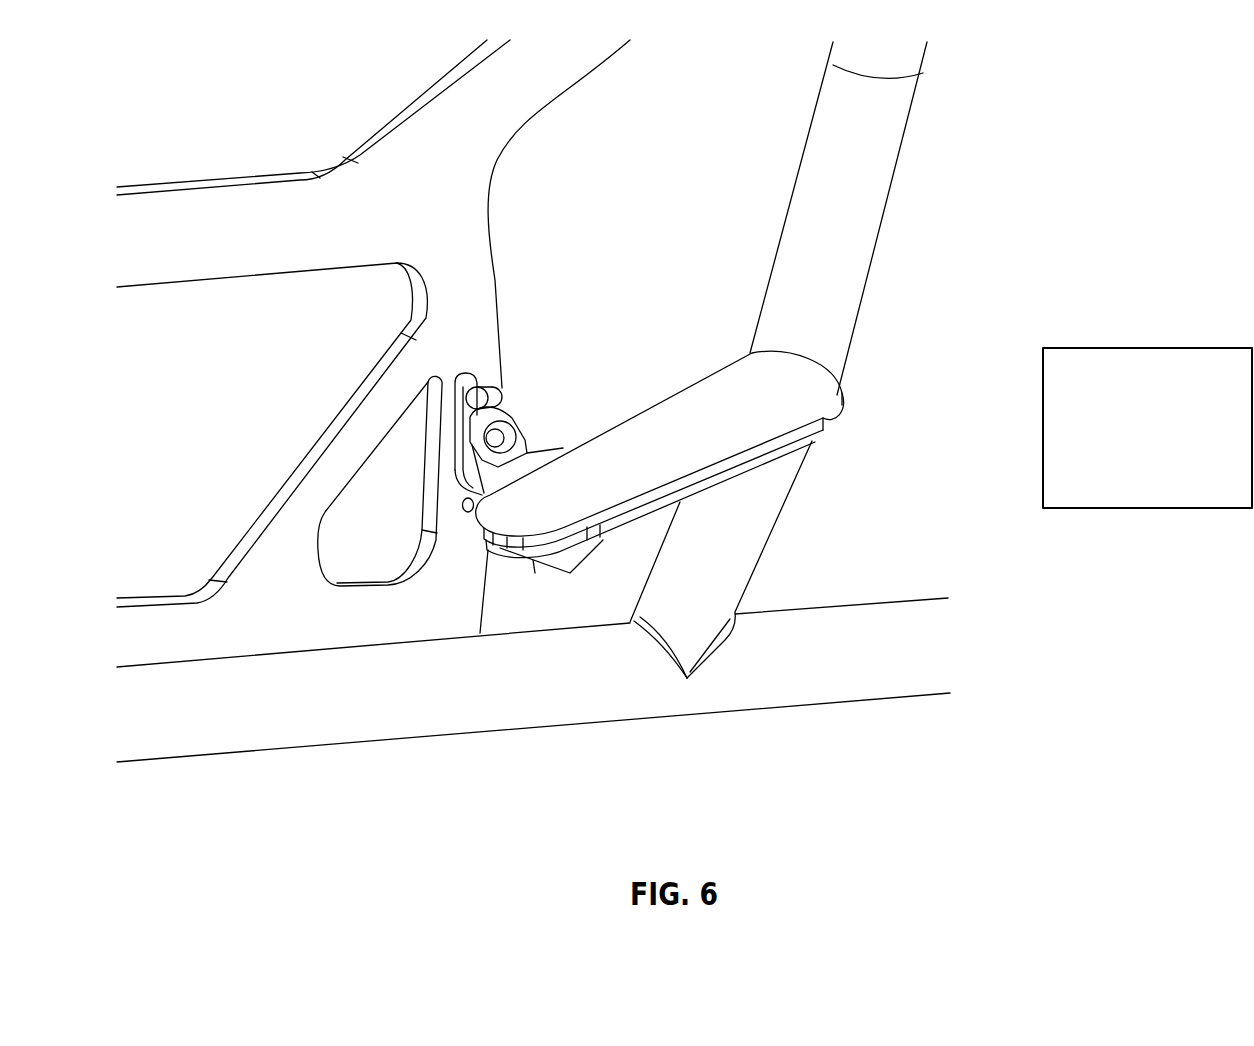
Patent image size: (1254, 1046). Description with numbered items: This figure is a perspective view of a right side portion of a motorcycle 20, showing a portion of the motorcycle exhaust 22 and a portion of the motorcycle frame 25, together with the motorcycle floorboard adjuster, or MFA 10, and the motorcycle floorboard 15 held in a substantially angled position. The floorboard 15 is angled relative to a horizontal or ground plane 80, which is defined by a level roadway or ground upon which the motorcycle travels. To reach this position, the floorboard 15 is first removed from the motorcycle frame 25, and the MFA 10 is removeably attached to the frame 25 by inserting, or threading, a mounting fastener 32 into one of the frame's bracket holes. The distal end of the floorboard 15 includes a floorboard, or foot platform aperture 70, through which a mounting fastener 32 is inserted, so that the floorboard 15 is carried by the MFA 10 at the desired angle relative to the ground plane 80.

The motorcycle floorboard adjuster 10 is at (468, 370).
The motorcycle floorboard 15 is at (680, 454).
The motorcycle 20 is at (975, 265).
The motorcycle exhaust 22 is at (867, 181).
The motorcycle frame 25 is at (434, 212).
The mounting fastener 32 is at (500, 380).
The foot platform aperture 70 is at (512, 415).
The ground plane 80 is at (1085, 394).